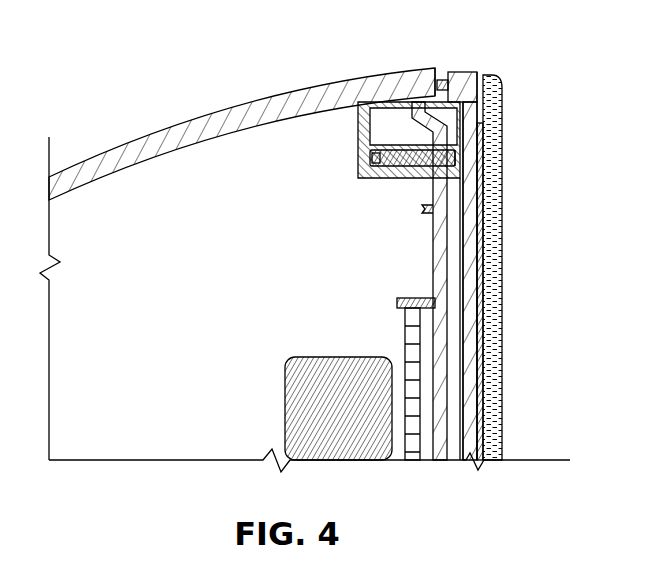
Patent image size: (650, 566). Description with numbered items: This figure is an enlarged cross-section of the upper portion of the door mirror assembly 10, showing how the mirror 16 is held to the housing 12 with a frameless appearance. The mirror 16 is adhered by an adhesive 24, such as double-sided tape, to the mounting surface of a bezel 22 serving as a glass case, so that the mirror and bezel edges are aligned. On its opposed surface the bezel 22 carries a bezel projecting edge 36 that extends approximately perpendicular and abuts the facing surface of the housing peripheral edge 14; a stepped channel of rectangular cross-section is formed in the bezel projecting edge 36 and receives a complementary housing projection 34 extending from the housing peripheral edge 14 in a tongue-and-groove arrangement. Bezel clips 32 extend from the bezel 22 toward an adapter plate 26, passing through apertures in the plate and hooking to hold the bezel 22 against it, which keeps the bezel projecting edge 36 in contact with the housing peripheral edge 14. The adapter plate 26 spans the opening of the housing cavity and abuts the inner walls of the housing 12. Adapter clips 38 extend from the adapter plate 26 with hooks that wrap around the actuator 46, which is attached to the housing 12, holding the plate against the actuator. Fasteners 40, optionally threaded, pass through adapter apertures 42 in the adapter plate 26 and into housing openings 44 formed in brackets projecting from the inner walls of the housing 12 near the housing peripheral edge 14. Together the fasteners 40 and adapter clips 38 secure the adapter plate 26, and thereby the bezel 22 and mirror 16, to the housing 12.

The door mirror assembly 10 is at (98, 99).
The housing 12 is at (283, 97).
The housing peripheral edge 14 is at (432, 70).
The mirror 16 is at (502, 330).
The bezel 22 is at (457, 363).
The adhesive 24 is at (495, 273).
The adapter plate 26 is at (432, 252).
The bezel clips 32 is at (422, 210).
The housing projection 34 is at (437, 89).
The bezel projecting edge 36 is at (448, 79).
The adapter clips 38 is at (398, 300).
The fasteners 40 is at (457, 148).
The adapter apertures 42 is at (443, 168).
The housing openings 44 is at (403, 147).
The actuator 46 is at (356, 355).